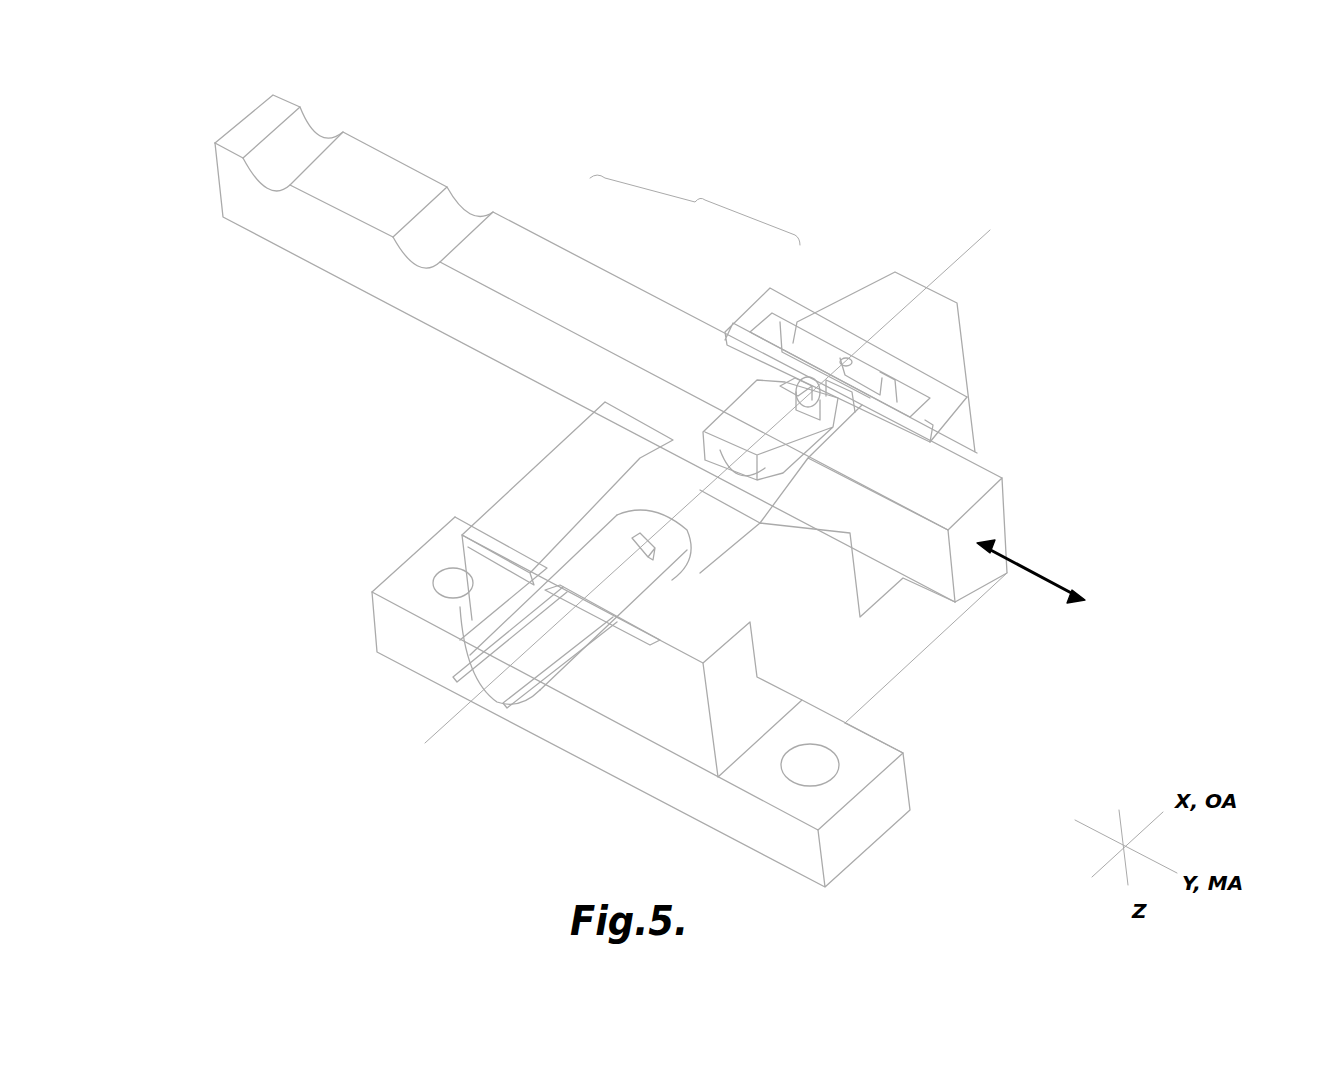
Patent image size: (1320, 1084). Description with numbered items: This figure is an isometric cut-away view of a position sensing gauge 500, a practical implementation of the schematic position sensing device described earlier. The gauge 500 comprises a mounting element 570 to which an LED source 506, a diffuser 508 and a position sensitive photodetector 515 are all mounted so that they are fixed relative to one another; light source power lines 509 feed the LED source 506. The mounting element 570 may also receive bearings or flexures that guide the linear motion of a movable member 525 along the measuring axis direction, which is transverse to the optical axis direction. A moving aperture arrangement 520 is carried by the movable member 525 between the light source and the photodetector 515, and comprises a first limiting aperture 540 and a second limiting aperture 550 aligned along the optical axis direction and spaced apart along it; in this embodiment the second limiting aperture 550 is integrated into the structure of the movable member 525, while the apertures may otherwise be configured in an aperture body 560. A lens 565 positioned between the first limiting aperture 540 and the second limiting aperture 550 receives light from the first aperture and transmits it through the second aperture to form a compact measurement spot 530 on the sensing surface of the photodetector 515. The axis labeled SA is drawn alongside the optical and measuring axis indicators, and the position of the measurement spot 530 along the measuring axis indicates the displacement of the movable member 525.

The position sensing gauge 500 is at (1040, 227).
The LED source 506 is at (625, 537).
The diffuser 508 is at (662, 453).
The light source power lines 509 is at (463, 667).
The position sensitive photodetector 515 is at (793, 323).
The moving aperture arrangement 520 is at (695, 202).
The movable member 525 is at (427, 178).
The measurement spot 530 is at (848, 364).
The first limiting aperture 540 is at (748, 408).
The second limiting aperture 550 is at (817, 386).
The aperture body 560 is at (765, 432).
The lens 565 is at (973, 473).
The mounting element 570 is at (887, 630).
The scan axis SA is at (985, 431).